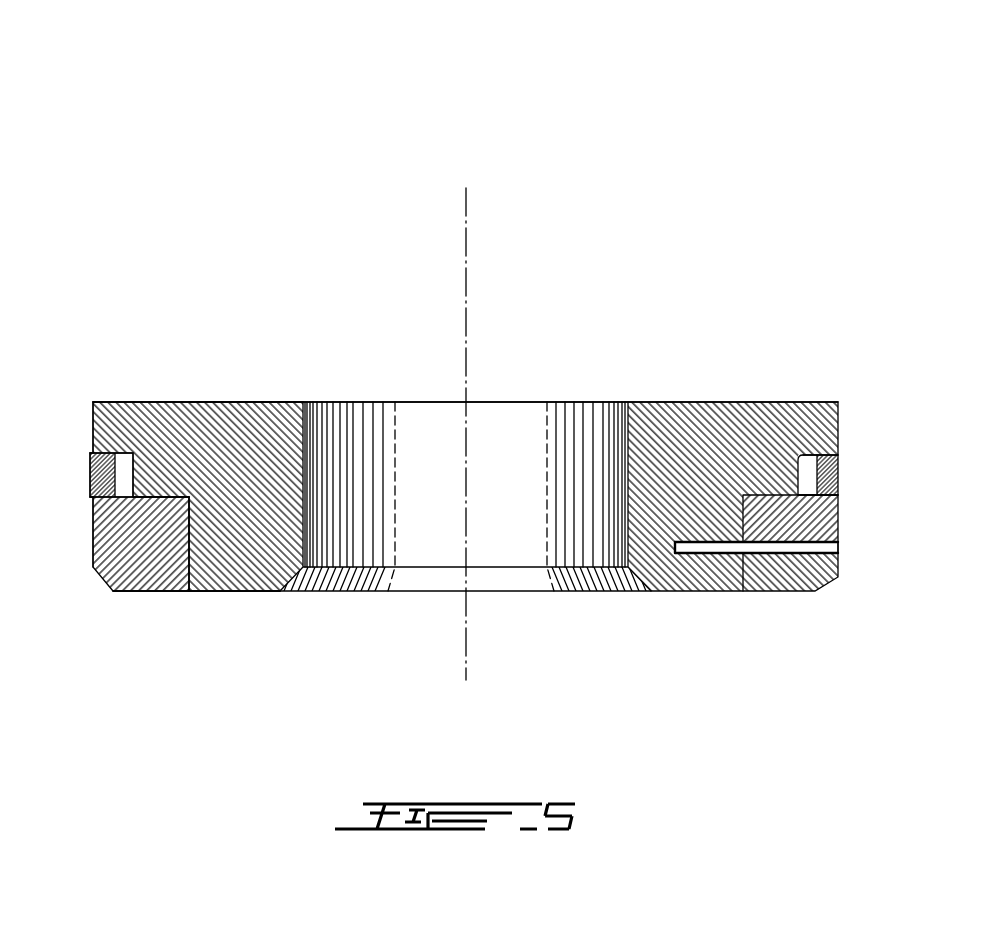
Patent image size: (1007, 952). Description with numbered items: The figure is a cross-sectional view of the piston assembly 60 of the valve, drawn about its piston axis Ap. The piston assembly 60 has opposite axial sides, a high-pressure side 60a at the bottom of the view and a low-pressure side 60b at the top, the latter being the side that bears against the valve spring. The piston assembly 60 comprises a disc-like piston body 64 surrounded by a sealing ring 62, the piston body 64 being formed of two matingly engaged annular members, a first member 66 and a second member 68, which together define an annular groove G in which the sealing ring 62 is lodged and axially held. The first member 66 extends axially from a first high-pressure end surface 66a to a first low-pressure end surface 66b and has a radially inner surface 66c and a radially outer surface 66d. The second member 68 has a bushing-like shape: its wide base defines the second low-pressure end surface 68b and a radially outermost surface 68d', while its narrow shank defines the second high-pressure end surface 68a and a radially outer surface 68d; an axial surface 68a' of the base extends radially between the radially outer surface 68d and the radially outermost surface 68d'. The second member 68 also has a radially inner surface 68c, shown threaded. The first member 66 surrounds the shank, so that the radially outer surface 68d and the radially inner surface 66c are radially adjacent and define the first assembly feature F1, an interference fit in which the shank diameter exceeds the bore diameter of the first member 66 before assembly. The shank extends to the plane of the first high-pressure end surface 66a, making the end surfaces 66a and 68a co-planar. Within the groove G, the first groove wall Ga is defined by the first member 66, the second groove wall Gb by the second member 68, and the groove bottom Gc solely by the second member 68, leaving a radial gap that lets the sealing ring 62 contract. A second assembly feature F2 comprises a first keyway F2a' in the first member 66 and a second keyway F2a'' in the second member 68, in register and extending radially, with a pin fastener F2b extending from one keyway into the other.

The piston assembly 60 is at (118, 126).
The high-pressure side 60a is at (226, 667).
The low-pressure side 60b is at (235, 326).
The sealing ring 62 is at (90, 478).
The piston body 64 is at (464, 496).
The first member 66 is at (140, 591).
The second member 68 is at (160, 412).
The first high-pressure end surface 66a is at (172, 591).
The first low-pressure end surface 66b is at (173, 497).
The radially inner surface 66c is at (190, 540).
The radially outer surface 66d is at (93, 541).
The second high-pressure end surface 68a is at (237, 629).
The axial surface 68a' is at (112, 509).
The second low-pressure end surface 68b is at (255, 402).
The radially inner surface 68c is at (303, 482).
The radially outer surface 68d is at (113, 544).
The radially outermost surface 68d' is at (64, 414).
The piston axis Ap is at (466, 215).
The annular groove G is at (897, 421).
The first groove wall Ga is at (830, 492).
The second groove wall Gb is at (832, 459).
The groove bottom Gc is at (820, 475).
The first assembly feature F1 is at (753, 517).
The second assembly feature F2 is at (862, 552).
The first keyway F2a' is at (790, 591).
The second keyway F2a'' is at (709, 591).
The fastener F2b is at (838, 552).